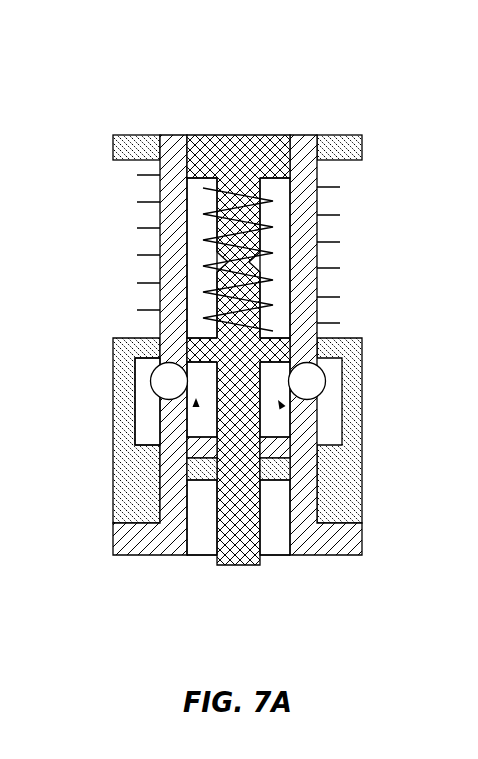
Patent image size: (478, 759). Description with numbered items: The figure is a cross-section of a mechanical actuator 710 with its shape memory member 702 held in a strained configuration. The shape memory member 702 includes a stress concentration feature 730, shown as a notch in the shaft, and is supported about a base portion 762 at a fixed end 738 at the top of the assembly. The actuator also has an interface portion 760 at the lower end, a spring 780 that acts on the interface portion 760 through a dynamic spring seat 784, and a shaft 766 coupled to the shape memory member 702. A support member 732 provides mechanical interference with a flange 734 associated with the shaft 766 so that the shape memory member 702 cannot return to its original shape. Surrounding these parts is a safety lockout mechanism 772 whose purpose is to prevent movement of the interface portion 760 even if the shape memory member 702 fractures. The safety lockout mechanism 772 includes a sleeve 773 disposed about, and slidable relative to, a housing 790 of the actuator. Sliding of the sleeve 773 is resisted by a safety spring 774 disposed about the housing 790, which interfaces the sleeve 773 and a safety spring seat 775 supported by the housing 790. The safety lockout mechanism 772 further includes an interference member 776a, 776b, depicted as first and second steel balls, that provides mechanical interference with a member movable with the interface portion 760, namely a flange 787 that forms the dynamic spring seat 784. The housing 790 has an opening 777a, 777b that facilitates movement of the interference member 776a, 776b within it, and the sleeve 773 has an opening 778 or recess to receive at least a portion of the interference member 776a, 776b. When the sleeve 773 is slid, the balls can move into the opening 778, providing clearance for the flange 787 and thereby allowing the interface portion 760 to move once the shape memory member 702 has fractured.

The mechanical actuator 710 is at (149, 45).
The base portion 762 is at (268, 135).
The safety spring seat 775 is at (120, 160).
The safety spring 774 is at (158, 201).
The fixed end 738 is at (282, 189).
The shape memory member 702 is at (262, 236).
The stress concentration feature 730 is at (271, 263).
The spring 780 is at (217, 269).
The dynamic spring seat 784 is at (265, 355).
The housing 790 is at (167, 323).
The flange 787 is at (285, 348).
The interference member 776a is at (165, 382).
The interference member 776b is at (305, 383).
The safety lockout mechanism 772 is at (68, 442).
The opening 777a is at (196, 406).
The opening 777b is at (282, 407).
The opening 778 is at (143, 443).
The support member 732 is at (278, 450).
The flange 734 is at (280, 468).
The sleeve 773 is at (188, 450).
The interface portion 760 is at (240, 576).
The shaft 766 is at (259, 525).